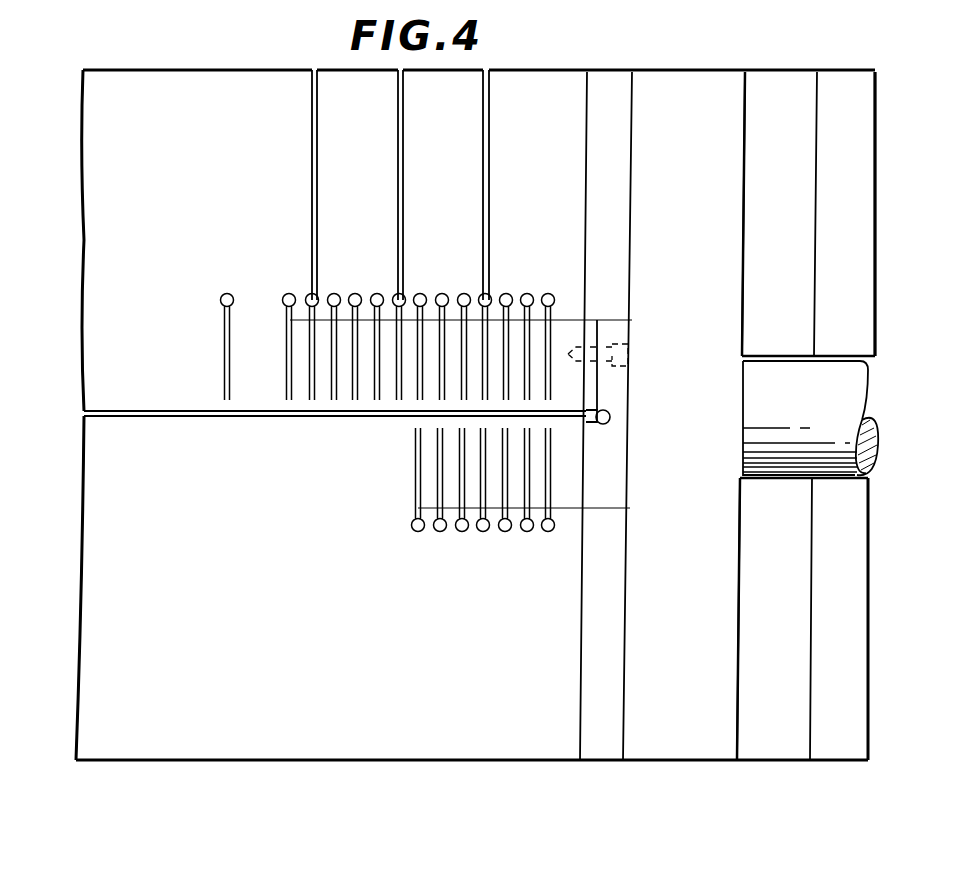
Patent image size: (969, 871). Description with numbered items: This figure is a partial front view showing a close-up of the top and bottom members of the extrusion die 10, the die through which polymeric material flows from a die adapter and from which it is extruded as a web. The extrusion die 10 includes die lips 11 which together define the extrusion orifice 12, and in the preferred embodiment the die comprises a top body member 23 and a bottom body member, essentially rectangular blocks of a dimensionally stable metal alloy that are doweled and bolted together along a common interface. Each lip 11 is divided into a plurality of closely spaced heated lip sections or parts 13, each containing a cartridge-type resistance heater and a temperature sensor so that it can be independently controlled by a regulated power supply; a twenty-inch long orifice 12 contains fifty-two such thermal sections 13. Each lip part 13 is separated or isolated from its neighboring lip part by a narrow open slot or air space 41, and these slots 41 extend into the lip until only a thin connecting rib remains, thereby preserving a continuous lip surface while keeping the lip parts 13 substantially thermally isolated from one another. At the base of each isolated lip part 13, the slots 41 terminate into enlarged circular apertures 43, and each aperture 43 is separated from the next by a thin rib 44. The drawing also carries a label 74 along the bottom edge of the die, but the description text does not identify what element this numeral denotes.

The extrusion die 10 is at (142, 64).
The die lips 11 is at (98, 305).
The extrusion orifice 12 is at (375, 418).
The heated lip sections or parts 13 is at (537, 328).
The top body member 23 is at (548, 92).
The open slot or air space 41 is at (580, 330).
The enlarged circular apertures 43 is at (463, 296).
The thin rib 44 is at (526, 530).
The board bottom edge 74 is at (522, 745).